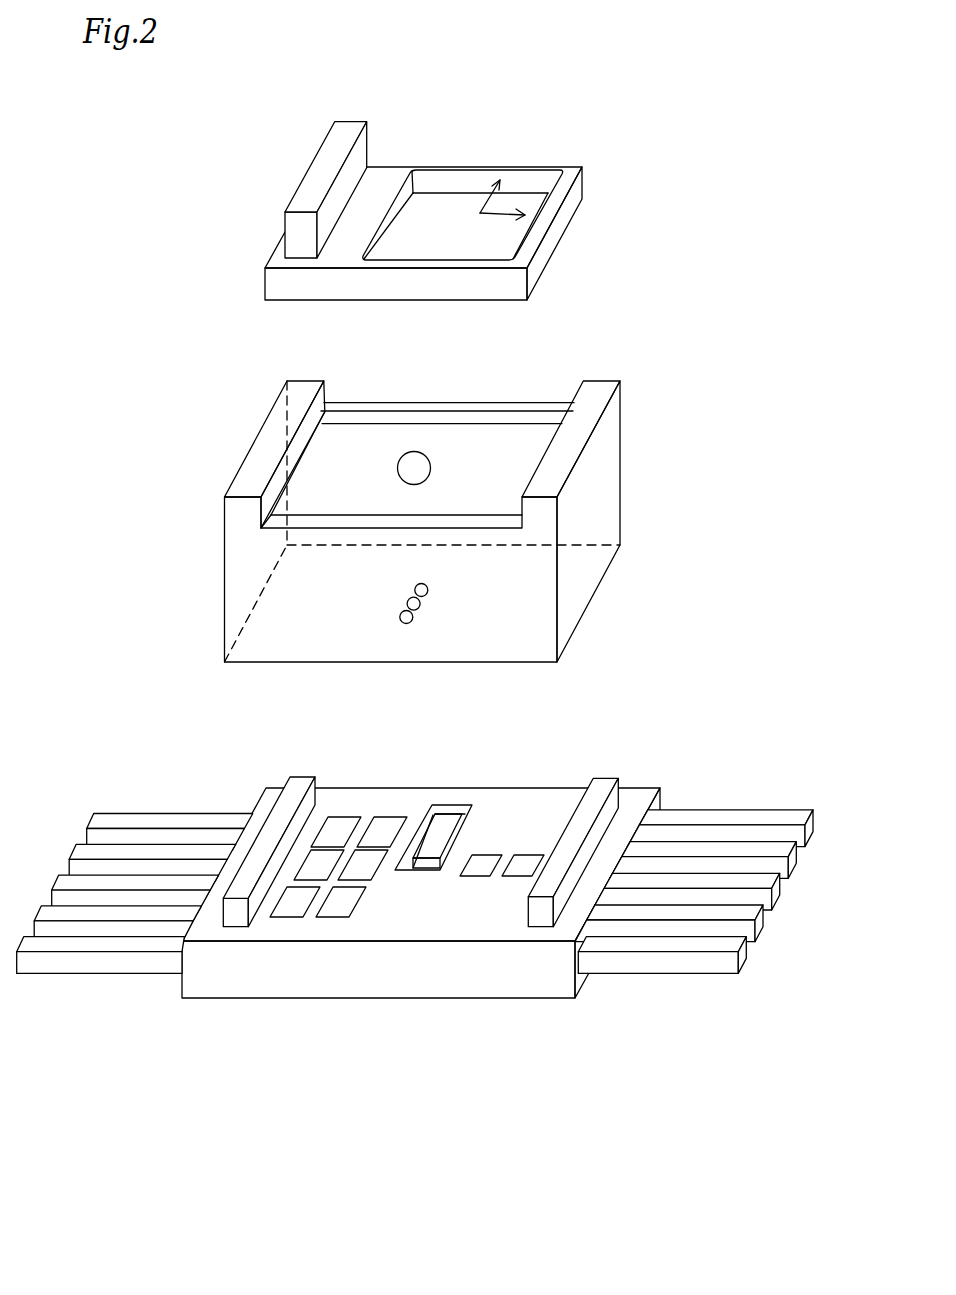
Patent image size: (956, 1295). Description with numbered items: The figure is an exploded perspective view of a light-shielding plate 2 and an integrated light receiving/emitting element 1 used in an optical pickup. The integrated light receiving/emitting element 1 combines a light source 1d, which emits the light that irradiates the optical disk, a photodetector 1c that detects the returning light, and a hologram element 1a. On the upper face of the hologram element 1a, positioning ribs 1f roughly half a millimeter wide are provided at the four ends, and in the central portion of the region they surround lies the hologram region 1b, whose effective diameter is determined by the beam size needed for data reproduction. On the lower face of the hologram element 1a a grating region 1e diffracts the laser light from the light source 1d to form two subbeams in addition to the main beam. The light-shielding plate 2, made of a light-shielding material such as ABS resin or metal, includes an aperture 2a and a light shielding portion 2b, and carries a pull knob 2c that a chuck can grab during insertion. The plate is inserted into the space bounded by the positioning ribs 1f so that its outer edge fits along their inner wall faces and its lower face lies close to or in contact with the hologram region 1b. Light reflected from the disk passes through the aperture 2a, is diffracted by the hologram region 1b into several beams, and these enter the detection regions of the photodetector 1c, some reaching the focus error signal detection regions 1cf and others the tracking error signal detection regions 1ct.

The integrated light receiving/emitting element 1 is at (462, 761).
The hologram element 1a is at (594, 568).
The hologram region 1b is at (414, 468).
The photodetector 1c is at (363, 937).
The focus error signal detection regions 1cf is at (315, 865).
The tracking error signal detection regions 1ct is at (377, 828).
The light source 1d is at (448, 822).
The grating region 1e is at (423, 605).
The positioning ribs 1f is at (312, 521).
The light-shielding plate 2 is at (475, 174).
The aperture 2a is at (437, 185).
The light shielding portion 2b is at (373, 183).
The pull knob 2c is at (328, 163).